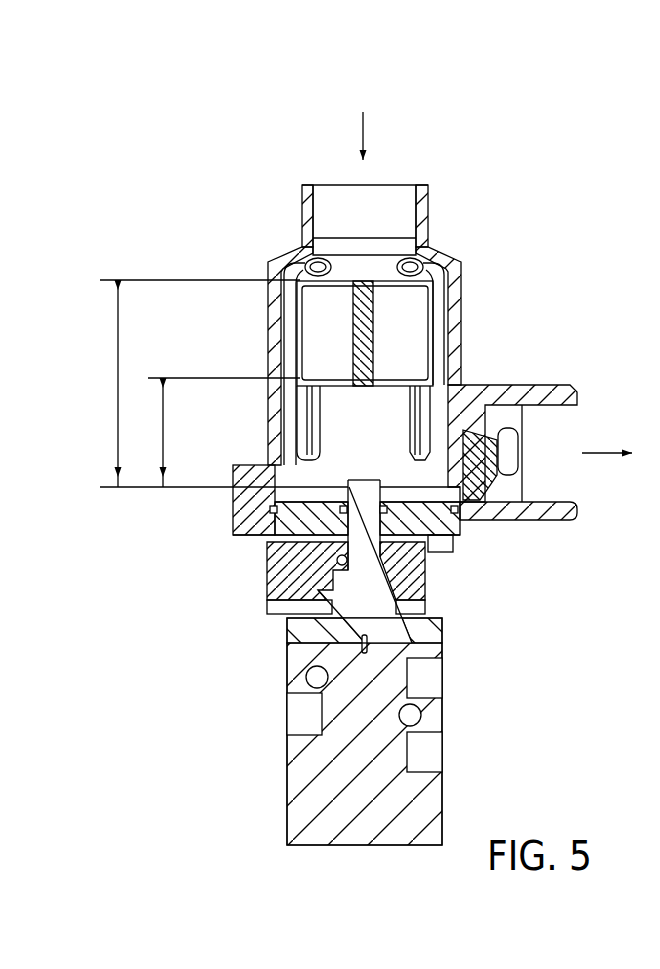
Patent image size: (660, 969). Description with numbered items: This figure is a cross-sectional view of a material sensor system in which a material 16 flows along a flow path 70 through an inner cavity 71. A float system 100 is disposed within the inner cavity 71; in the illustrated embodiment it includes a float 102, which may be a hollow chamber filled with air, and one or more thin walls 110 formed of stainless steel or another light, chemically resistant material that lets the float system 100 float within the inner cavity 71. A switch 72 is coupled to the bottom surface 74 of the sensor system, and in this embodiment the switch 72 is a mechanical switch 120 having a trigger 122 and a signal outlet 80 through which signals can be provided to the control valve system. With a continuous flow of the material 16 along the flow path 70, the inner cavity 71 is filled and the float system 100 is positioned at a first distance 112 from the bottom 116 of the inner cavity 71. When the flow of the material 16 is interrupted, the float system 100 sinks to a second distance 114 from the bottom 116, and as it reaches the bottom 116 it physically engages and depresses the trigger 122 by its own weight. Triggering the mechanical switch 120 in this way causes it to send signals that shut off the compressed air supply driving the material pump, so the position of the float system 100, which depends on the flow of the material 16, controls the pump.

The material 16 is at (365, 133).
The flow path 70 is at (333, 142).
The inner cavity 71 is at (325, 442).
The switch 72 is at (462, 717).
The bottom surface 74 is at (478, 531).
The signal outlet 80 is at (392, 184).
The float system 100 is at (376, 390).
The float 102 is at (322, 372).
The thin walls 110 is at (368, 293).
The first distance 112 is at (117, 380).
The second distance 114 is at (162, 431).
The bottom 116 is at (312, 486).
The mechanical switch 120 is at (515, 649).
The trigger 122 is at (369, 480).